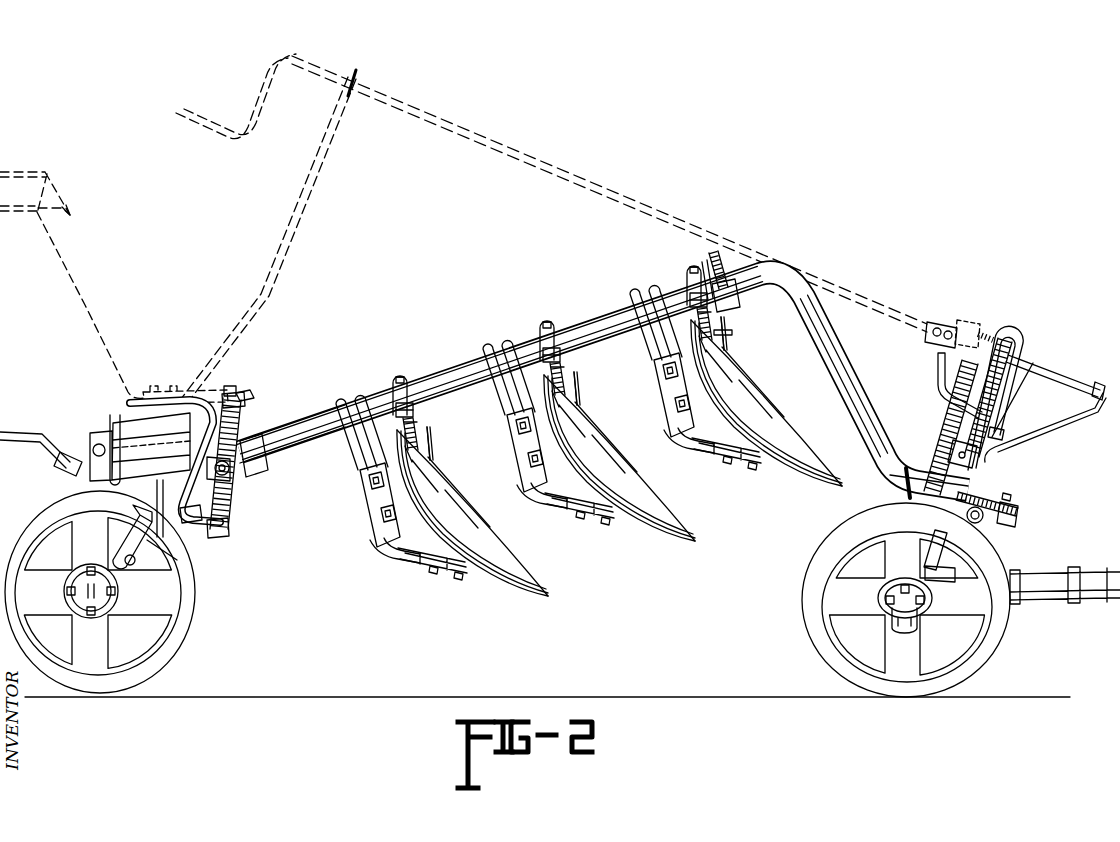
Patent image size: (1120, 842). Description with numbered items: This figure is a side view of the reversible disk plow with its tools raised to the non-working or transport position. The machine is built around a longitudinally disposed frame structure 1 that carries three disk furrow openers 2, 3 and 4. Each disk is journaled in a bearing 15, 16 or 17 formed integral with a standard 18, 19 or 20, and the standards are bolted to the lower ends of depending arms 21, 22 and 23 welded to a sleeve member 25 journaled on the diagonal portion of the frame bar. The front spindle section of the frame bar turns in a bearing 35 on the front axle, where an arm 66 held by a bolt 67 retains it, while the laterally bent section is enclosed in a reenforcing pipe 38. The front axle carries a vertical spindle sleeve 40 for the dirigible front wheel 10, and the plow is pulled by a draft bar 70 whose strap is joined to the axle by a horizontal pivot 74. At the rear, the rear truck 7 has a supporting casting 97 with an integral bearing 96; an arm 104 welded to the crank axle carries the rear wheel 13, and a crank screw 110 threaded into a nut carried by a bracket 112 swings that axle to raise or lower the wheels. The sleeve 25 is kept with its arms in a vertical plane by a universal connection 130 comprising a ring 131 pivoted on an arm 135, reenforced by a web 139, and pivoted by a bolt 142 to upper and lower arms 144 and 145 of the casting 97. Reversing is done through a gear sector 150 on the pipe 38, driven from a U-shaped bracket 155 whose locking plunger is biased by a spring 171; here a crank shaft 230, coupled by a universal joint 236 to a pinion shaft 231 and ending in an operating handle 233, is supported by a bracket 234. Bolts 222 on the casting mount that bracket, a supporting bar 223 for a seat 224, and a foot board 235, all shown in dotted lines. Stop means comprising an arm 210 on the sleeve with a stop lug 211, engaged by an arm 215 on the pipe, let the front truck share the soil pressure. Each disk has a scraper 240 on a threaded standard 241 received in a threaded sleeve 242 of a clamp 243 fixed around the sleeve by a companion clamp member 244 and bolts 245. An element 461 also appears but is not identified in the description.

The frame structure 1 is at (843, 361).
The disk 2 is at (524, 580).
The disk 3 is at (677, 533).
The disk 4 is at (818, 480).
The rear truck 7 is at (132, 566).
The dirigible wheel 10 is at (976, 652).
The rear wheel 13 is at (180, 632).
The bearing 15 is at (442, 560).
The bearing 16 is at (594, 506).
The bearing 17 is at (738, 455).
The standard 18 is at (378, 500).
The standard 19 is at (526, 452).
The standard 20 is at (670, 398).
The depending arm 21 is at (358, 452).
The depending arm 22 is at (505, 402).
The depending arm 23 is at (648, 340).
The sleeve member 25 is at (592, 326).
The bearing sleeve 35 is at (975, 500).
The reenforcing pipe 38 is at (852, 394).
The spindle sleeve 40 is at (926, 548).
The arm 66 is at (1018, 517).
The bolt 67 is at (1012, 502).
The draft bar 70 is at (1040, 571).
The horizontal pivot 74 is at (940, 574).
The bearing 96 is at (128, 445).
The rear supporting casting 97 is at (118, 403).
The arm 104 is at (168, 560).
The crank screw 110 is at (64, 468).
The bracket 112 is at (78, 458).
The universal connection 130 is at (257, 407).
The ring 131 is at (230, 487).
The arm 135 is at (262, 466).
The web 139 is at (272, 440).
The pivot bolt 142 is at (230, 528).
The upper forwardly extending arm 144 is at (228, 388).
The lower forwardly extending arm 145 is at (199, 528).
The gear sector 150 is at (950, 430).
The U-shaped bracket 155 is at (1012, 336).
The biasing spring 171 is at (1003, 430).
The arm 210 is at (705, 262).
The stop lug 211 is at (727, 296).
The arm 215 is at (722, 254).
The bolts 222 is at (172, 386).
The supporting bar 223 is at (124, 300).
The seat 224 is at (38, 188).
The crank shaft 230 is at (630, 199).
The shaft 231 is at (1060, 376).
The operating handle 233 is at (225, 126).
The bracket 234 is at (298, 246).
The foot board 235 is at (244, 394).
The universal joint 236 is at (962, 322).
The scraper 240 is at (431, 452).
The threaded standard 241 is at (732, 331).
The threaded sleeve 242 is at (418, 432).
The clamp 243 is at (415, 413).
The companion clamp member 244 is at (391, 385).
The bolts 245 is at (400, 377).
The brace 461 is at (1062, 422).